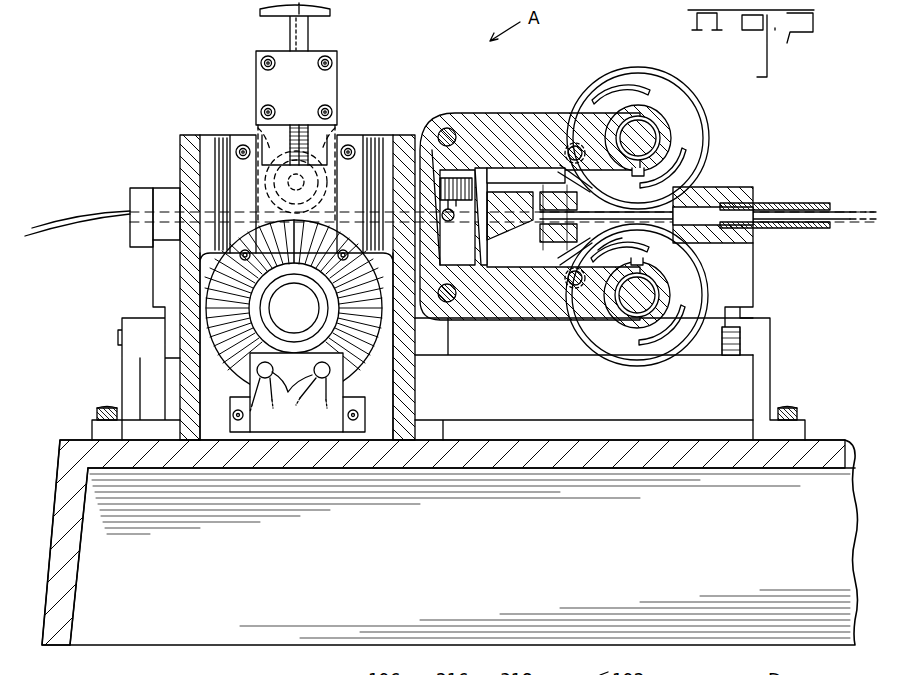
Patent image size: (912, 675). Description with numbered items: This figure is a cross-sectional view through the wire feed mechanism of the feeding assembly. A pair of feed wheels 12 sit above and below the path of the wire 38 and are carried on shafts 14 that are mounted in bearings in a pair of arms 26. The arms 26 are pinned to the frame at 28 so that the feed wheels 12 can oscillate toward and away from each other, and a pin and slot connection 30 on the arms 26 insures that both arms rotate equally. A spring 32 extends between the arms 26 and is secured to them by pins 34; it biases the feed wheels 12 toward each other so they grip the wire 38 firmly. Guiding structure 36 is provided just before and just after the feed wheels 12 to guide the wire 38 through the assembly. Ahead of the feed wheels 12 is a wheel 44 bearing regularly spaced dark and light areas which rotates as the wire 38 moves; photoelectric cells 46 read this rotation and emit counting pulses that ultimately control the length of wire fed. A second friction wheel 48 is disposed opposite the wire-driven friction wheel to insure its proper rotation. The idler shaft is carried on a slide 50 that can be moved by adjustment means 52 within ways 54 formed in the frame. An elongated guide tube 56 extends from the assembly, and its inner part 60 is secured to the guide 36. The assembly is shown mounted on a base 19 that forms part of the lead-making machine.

The feed wheels 12 is at (700, 128).
The shafts 14 is at (648, 142).
The base 19 is at (122, 628).
The arms 26 is at (520, 118).
The pin connection to frame 28 is at (447, 128).
The pin and slot connection 30 is at (450, 222).
The spring 32 is at (604, 252).
The pins 34 is at (567, 153).
The guiding structure 36 is at (542, 238).
The wire 38 is at (52, 224).
The counting wheel 44 is at (356, 338).
The photoelectric cells 46 is at (297, 392).
The second friction wheel 48 is at (337, 118).
The slide 50 is at (270, 205).
The adjustment means 52 is at (332, 14).
The ways 54 is at (265, 130).
The guide tube 56 is at (804, 230).
The inner part 60 is at (778, 203).